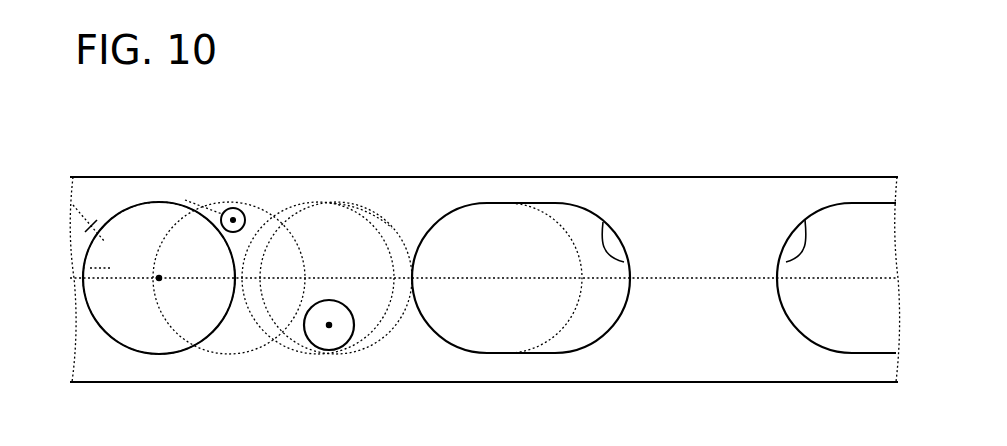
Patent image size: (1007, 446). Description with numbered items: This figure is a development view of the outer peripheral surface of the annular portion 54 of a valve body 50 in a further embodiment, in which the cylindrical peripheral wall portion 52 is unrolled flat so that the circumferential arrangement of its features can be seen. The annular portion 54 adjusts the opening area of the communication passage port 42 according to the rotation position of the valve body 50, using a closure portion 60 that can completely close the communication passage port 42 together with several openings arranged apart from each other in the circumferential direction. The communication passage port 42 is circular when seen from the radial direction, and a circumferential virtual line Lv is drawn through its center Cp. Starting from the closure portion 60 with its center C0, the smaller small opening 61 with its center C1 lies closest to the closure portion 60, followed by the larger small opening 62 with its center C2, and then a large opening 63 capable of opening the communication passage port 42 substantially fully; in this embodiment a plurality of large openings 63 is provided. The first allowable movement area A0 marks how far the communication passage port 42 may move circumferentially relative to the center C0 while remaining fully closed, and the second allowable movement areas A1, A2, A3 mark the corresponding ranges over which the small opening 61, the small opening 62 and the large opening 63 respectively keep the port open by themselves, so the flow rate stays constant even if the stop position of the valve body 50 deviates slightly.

The valve body 50 is at (70, 170).
The first allowable movement area A0 is at (100, 175).
The communication passage port 42 is at (88, 238).
The closure portion 60 is at (90, 268).
The center of the closure portion C0 is at (142, 204).
The center of the communication passage port Cp is at (159, 275).
The second allowable movement area A1 is at (200, 212).
The center of the small opening C1 is at (232, 206).
The small opening 61 is at (240, 209).
The center of the small opening C2 is at (328, 322).
The small opening 62 is at (342, 304).
The second allowable movement area A2 is at (393, 228).
The peripheral wall portion 52 is at (476, 176).
The second allowable movement area A3 is at (567, 200).
The large opening 63 is at (603, 222).
The annular portion 54 is at (689, 198).
The circumferential virtual line Lv is at (700, 280).